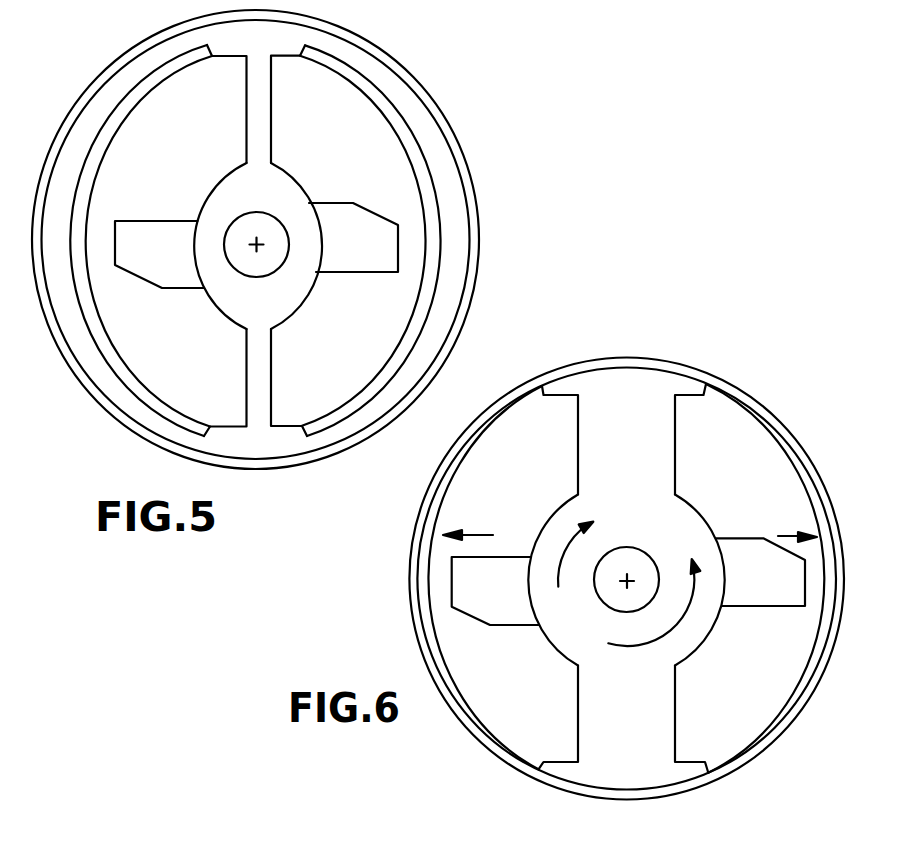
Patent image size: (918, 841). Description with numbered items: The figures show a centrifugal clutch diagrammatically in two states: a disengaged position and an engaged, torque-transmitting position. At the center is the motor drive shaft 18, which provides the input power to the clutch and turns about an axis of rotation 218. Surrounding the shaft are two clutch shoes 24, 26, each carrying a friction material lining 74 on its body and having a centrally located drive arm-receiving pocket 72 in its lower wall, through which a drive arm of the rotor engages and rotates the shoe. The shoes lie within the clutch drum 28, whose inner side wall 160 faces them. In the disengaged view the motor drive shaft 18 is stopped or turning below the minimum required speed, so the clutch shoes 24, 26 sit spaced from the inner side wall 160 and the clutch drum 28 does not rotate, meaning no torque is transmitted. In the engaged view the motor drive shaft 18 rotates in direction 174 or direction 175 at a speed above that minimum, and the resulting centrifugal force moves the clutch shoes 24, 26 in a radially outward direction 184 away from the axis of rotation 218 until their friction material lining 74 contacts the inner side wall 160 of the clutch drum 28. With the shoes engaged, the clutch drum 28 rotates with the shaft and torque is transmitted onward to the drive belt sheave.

In FIG. 5, the motor drive shaft 18 is at (256, 253).
In FIG. 6, the motor drive shaft 18 is at (622, 593).
In FIG. 5, the clutch shoe 24 is at (390, 163).
In FIG. 6, the clutch shoe 24 is at (747, 438).
In FIG. 5, the clutch shoe 26 is at (149, 244).
In FIG. 6, the clutch shoe 26 is at (476, 591).
In FIG. 5, the clutch drum 28 is at (473, 192).
In FIG. 6, the clutch drum 28 is at (733, 390).
In FIG. 5, the drive arm-receiving pocket 72 is at (140, 280).
In FIG. 6, the drive arm-receiving pocket 72 is at (478, 610).
In FIG. 5, the friction material lining 74 is at (103, 340).
In FIG. 6, the friction material lining 74 is at (495, 738).
In FIG. 5, the inner side wall 160 is at (463, 293).
In FIG. 6, the inner side wall 160 is at (457, 703).
In FIG. 6, the direction of rotation 174 is at (668, 634).
In FIG. 6, the direction of rotation 175 is at (572, 540).
In FIG. 6, the radially outward direction 184 is at (478, 533).
In FIG. 5, the axis of rotation 218 is at (252, 250).
In FIG. 6, the axis of rotation 218 is at (625, 583).